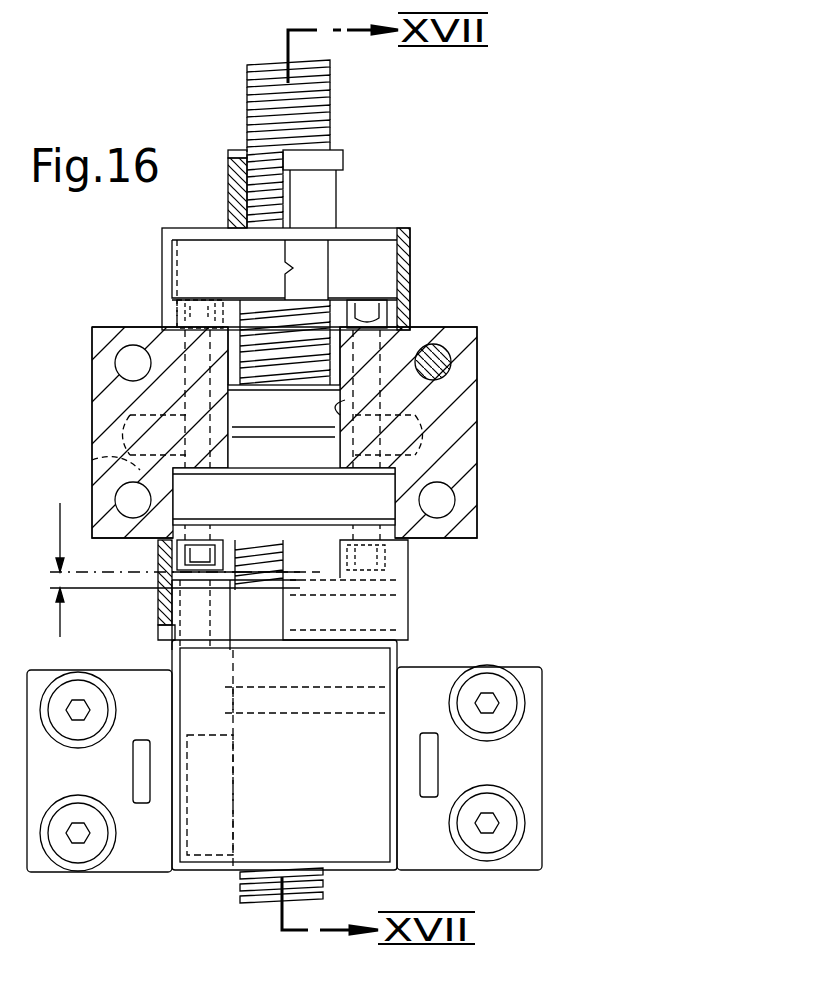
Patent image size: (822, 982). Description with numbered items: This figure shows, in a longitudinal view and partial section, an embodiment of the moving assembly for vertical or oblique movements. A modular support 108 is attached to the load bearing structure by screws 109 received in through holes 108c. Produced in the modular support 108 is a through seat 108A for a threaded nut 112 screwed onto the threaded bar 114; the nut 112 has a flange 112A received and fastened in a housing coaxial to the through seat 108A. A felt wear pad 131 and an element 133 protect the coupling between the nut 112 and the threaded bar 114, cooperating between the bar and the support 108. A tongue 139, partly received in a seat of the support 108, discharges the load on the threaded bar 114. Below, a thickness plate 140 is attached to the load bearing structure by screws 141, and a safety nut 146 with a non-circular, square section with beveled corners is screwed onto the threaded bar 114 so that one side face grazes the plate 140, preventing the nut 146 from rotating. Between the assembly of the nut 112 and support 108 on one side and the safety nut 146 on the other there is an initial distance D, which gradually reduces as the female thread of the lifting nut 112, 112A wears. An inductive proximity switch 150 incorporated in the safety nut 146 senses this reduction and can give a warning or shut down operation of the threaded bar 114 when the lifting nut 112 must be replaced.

The threaded bar 114 is at (323, 107).
The felt wear pad 131 is at (385, 268).
The modular support 108 is at (440, 321).
The through holes 108c is at (135, 362).
The screws 109 is at (440, 360).
The through seat 108A is at (345, 408).
The threaded nut 112 is at (245, 412).
The tongue 139 is at (92, 452).
The flange 112A is at (343, 505).
The element 133 is at (413, 602).
The initial distance D is at (60, 588).
The inductive proximity switch 150 is at (165, 660).
The thickness plate 140 is at (433, 690).
The screws 141 is at (487, 840).
The safety nut 146 is at (247, 828).